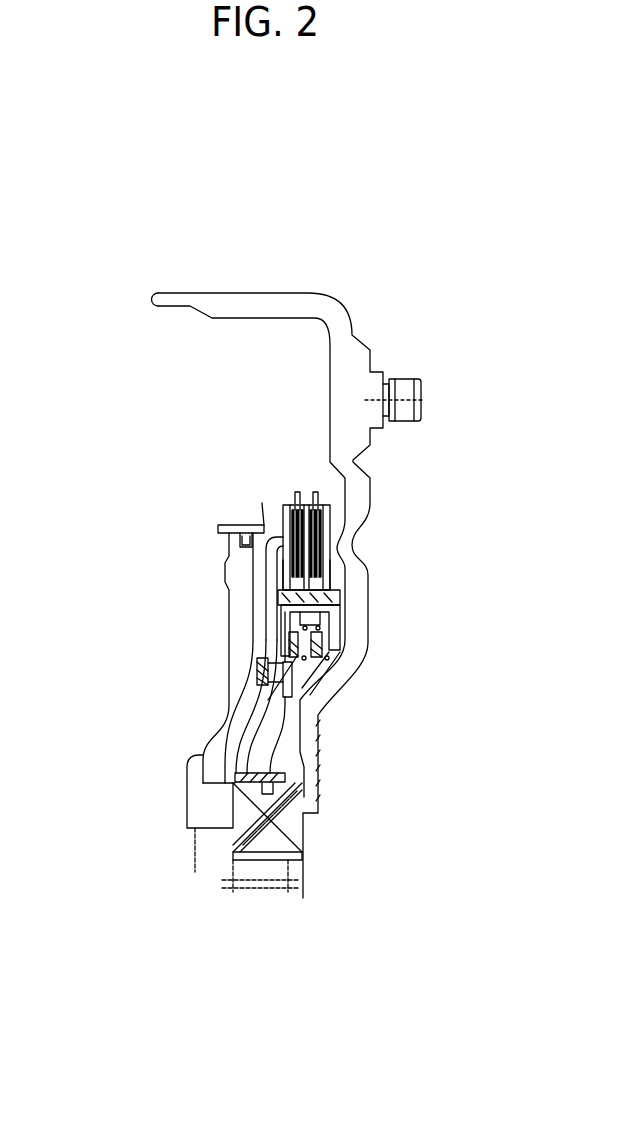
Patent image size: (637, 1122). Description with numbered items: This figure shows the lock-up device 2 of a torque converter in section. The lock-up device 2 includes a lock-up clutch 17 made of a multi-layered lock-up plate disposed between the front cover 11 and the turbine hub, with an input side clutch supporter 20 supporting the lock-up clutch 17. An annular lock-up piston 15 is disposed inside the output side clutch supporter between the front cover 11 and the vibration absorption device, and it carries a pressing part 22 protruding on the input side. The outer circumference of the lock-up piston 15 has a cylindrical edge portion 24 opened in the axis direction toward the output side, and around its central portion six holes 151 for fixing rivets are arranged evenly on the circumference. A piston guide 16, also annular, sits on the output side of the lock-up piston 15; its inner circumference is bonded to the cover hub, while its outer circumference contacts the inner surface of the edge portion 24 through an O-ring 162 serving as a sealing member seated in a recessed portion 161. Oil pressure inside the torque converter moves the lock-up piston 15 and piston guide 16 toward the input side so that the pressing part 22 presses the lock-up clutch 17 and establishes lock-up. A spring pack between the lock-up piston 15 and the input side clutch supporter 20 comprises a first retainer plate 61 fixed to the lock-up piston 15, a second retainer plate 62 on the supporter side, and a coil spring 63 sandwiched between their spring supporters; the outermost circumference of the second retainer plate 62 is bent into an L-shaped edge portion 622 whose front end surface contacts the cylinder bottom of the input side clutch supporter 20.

The lock-up device 2 is at (281, 272).
The front cover 11 is at (372, 490).
The pressing part 22 is at (332, 548).
The lock-up clutch 17 is at (332, 578).
The input side clutch supporter 20 is at (342, 601).
The second retainer plate 62 is at (342, 650).
The edge portion 622 is at (340, 622).
The coil spring 63 is at (318, 662).
The edge portion 24 is at (262, 503).
The O-ring 162 is at (238, 522).
The recessed portion 161 is at (240, 545).
The piston guide 16 is at (229, 600).
The lock-up piston 15 is at (215, 732).
The holes 151 is at (256, 659).
The first retainer plate 61 is at (256, 683).